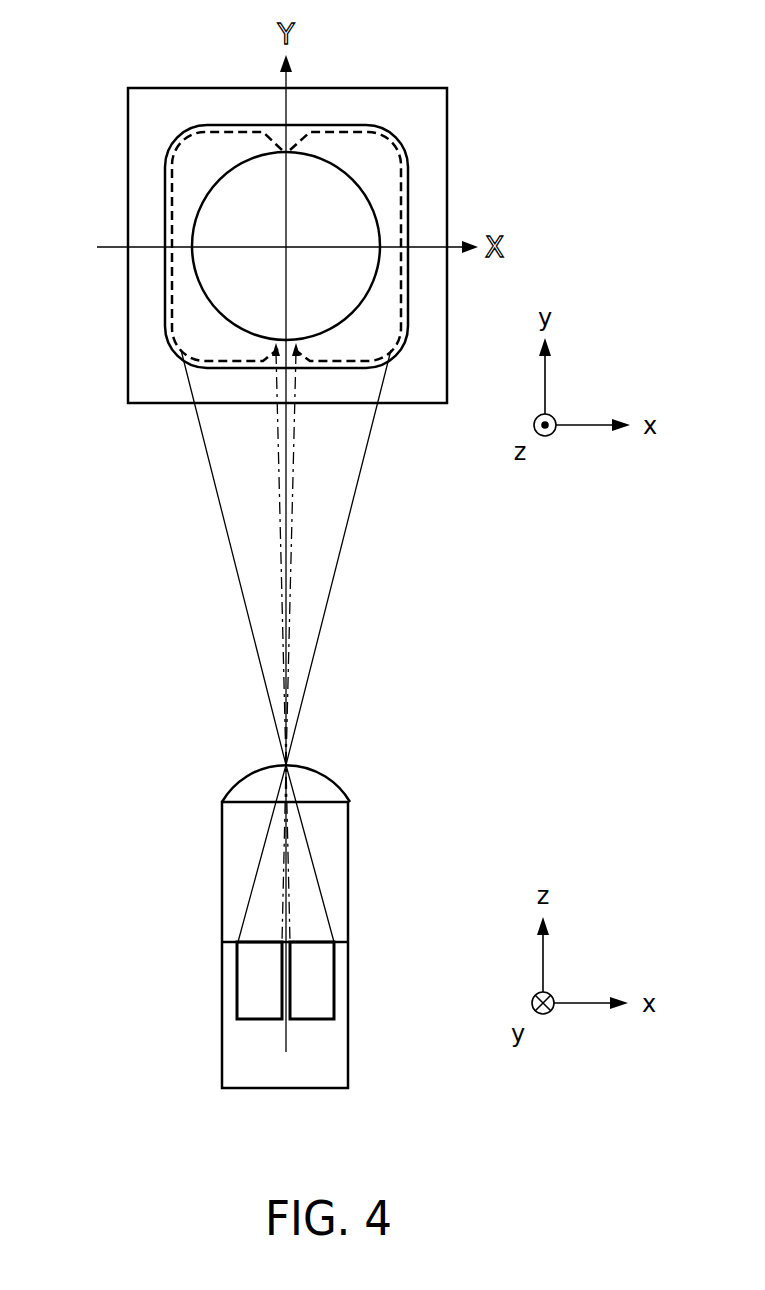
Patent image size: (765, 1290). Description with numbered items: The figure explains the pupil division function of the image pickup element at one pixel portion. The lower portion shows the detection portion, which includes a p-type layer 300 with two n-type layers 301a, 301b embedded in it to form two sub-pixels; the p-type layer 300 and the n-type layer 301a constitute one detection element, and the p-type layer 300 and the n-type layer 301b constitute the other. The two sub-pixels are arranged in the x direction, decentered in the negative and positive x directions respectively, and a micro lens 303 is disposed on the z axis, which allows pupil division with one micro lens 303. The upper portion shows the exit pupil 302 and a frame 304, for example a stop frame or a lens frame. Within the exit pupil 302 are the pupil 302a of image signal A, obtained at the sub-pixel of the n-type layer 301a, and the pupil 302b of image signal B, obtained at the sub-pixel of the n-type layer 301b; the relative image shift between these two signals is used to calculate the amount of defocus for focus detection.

The p-type layer 300 is at (257, 1082).
The n-type layer 301a is at (243, 1000).
The n-type layer 301b is at (328, 1000).
The exit pupil 302 is at (409, 165).
The pupil of image signal A 302a is at (402, 215).
The pupil of image signal B 302b is at (171, 218).
The micro lens 303 is at (330, 779).
The frame 304 is at (338, 165).